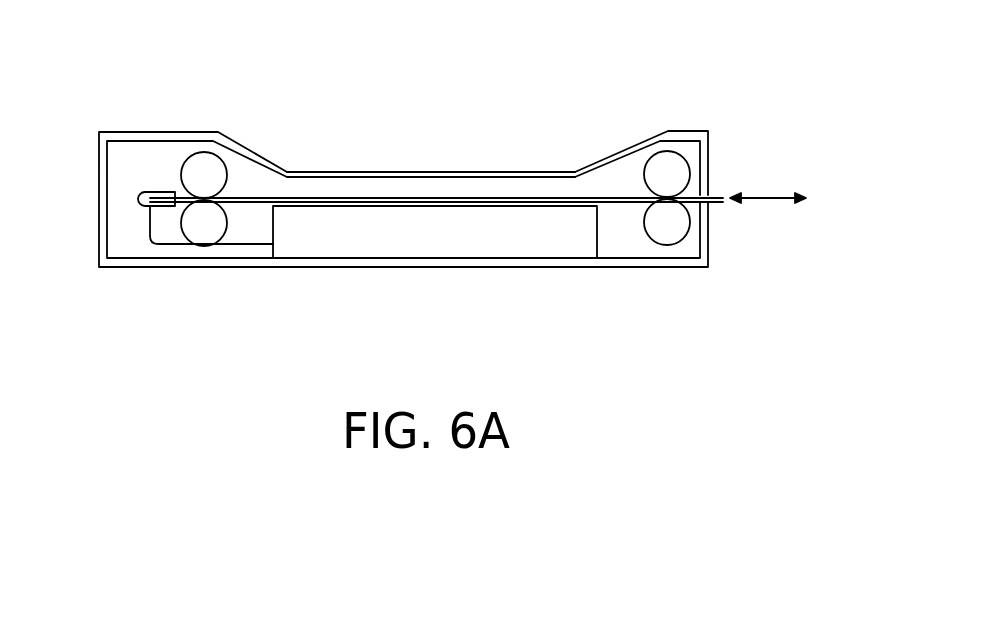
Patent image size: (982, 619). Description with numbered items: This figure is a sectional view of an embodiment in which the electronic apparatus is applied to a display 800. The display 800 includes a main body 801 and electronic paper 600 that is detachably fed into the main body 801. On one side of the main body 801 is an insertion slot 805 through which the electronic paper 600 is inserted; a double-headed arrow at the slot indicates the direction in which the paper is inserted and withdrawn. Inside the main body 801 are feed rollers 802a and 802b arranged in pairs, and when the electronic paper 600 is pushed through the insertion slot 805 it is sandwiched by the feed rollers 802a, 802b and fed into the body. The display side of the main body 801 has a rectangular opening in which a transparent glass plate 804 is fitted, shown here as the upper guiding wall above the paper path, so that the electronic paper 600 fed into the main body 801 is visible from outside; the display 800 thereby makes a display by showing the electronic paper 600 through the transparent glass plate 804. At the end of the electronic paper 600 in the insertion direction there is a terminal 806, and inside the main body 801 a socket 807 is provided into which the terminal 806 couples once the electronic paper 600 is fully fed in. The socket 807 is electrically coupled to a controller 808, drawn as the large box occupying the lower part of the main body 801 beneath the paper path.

The display 800 is at (447, 176).
The main body 801 is at (165, 133).
The feed roller 802a is at (230, 162).
The feed roller 802b is at (667, 149).
The transparent glass plate 804 is at (488, 171).
The electronic paper 600 is at (420, 196).
The insertion slot 805 is at (710, 194).
The terminal 806 is at (145, 192).
The socket 807 is at (142, 207).
The controller 808 is at (447, 248).